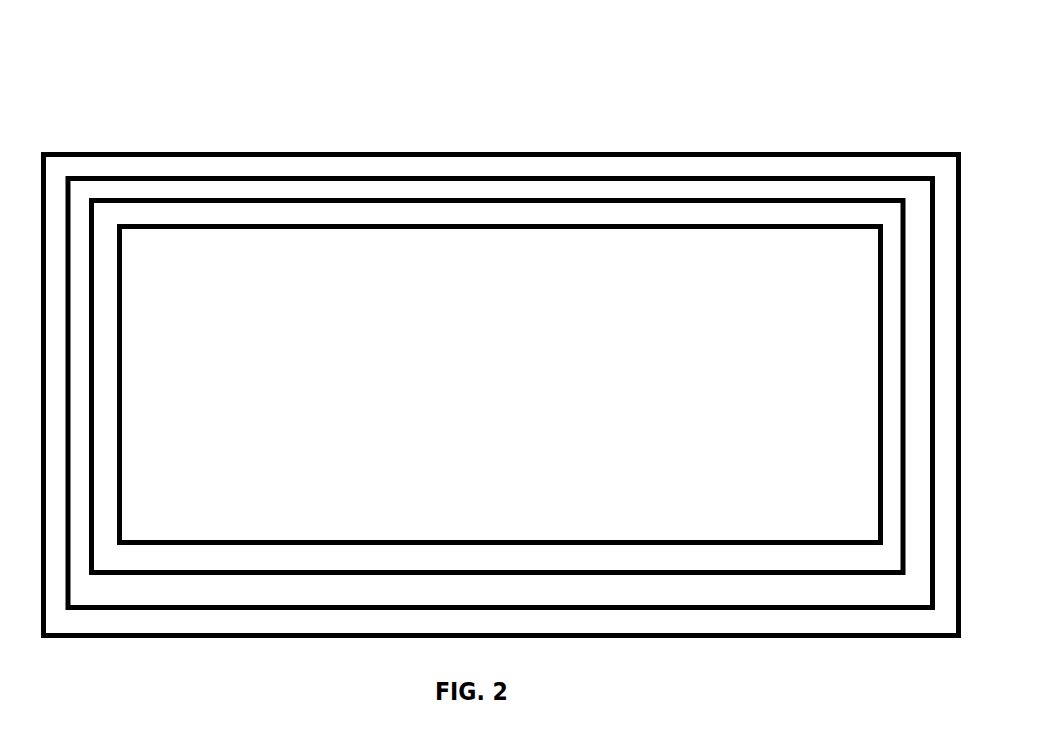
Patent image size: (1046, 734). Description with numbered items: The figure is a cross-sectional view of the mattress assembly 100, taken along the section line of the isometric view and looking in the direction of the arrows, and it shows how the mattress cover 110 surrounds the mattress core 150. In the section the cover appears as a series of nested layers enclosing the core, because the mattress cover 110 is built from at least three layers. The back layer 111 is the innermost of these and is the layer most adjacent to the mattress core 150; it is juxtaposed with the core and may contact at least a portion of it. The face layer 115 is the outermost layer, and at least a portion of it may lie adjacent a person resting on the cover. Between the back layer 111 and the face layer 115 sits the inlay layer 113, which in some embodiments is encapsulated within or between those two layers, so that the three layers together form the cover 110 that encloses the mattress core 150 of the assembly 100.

The mattress assembly 100 is at (501, 373).
The mattress cover 110 is at (501, 339).
The back layer 111 is at (499, 456).
The inlay layer 113 is at (498, 452).
The face layer 115 is at (500, 440).
The mattress core 150 is at (500, 316).